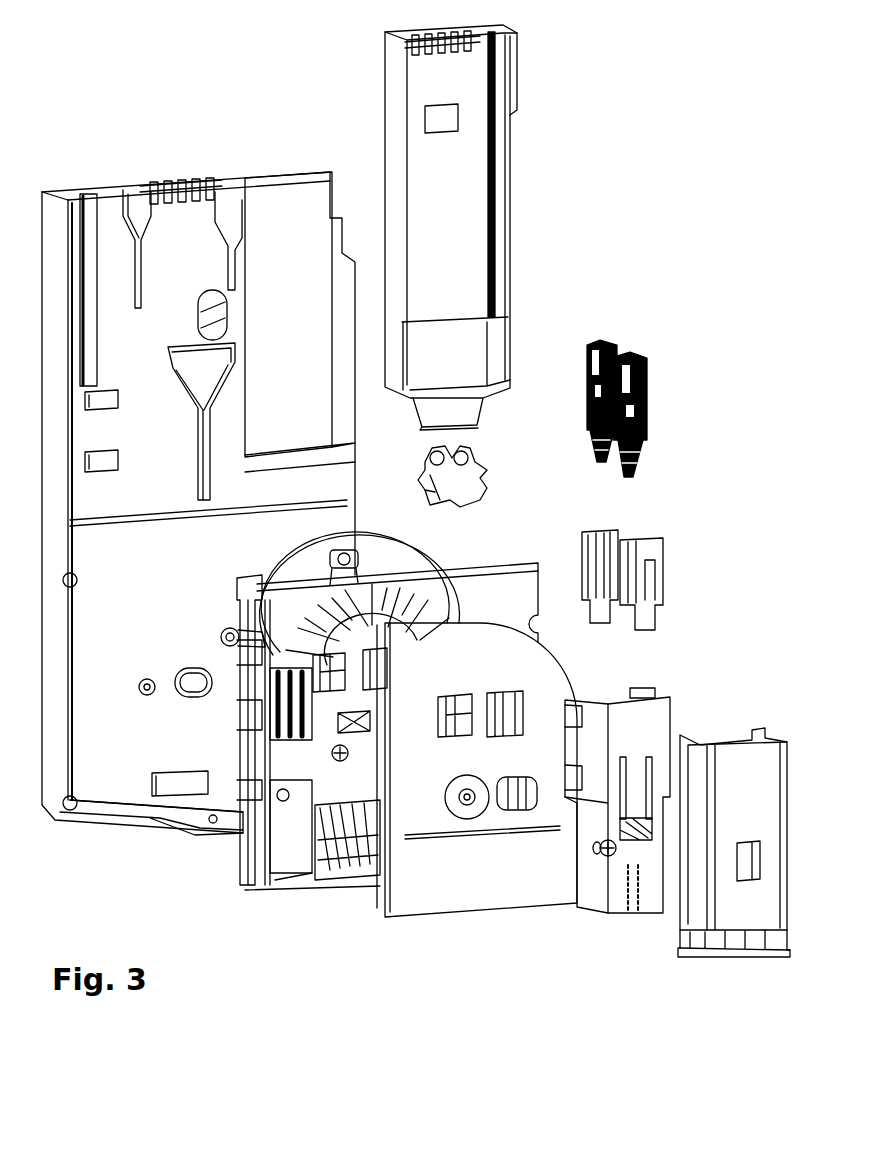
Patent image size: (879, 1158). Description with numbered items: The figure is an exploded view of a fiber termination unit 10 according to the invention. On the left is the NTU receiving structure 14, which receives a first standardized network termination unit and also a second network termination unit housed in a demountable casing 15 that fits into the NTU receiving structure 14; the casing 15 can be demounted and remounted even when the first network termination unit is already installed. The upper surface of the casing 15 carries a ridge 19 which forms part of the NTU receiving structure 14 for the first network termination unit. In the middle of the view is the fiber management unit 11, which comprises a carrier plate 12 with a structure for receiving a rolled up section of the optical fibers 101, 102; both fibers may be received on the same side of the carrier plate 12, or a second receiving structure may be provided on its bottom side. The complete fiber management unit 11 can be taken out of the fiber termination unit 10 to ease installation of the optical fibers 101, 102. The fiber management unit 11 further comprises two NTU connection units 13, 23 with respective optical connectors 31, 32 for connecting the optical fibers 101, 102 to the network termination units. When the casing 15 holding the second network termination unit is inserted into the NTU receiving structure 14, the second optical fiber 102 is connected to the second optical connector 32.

The fiber termination unit 10 is at (626, 149).
The fiber management unit 11 is at (383, 912).
The carrier plate 12 is at (465, 566).
The NTU connection unit 13 is at (773, 737).
The NTU receiving structure 14 is at (190, 250).
The demountable casing 15 is at (386, 60).
The ridge 19 is at (512, 142).
The NTU connection unit 23 is at (600, 533).
The optical connector 31 is at (650, 405).
The second optical connector 32 is at (590, 407).
The optical fiber 101 is at (630, 918).
The second optical fiber 102 is at (640, 917).